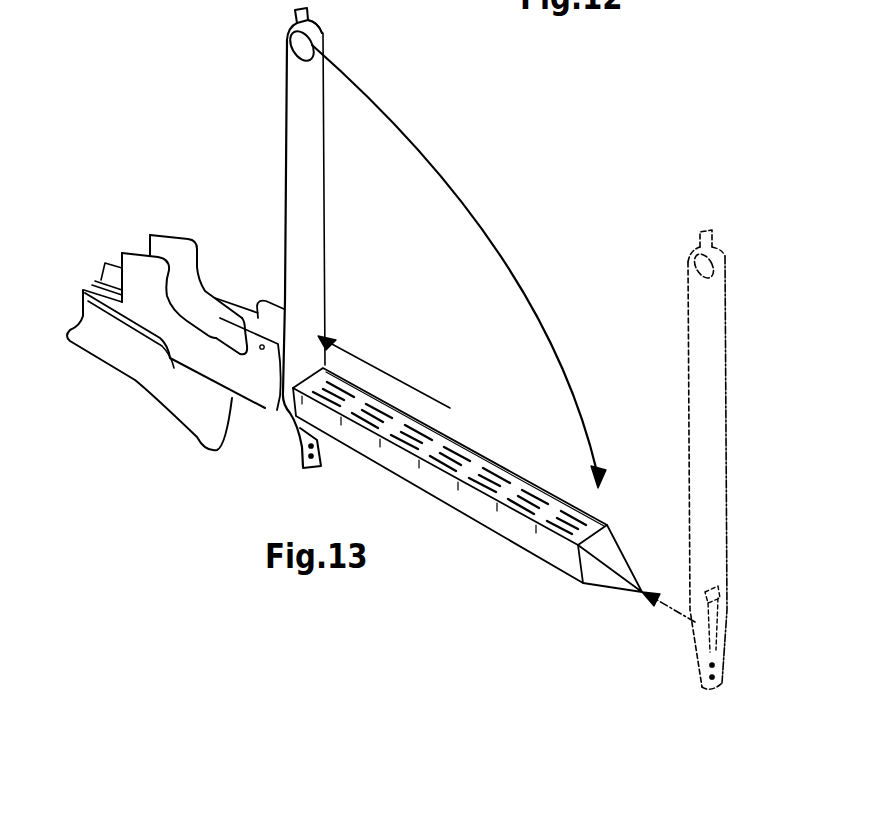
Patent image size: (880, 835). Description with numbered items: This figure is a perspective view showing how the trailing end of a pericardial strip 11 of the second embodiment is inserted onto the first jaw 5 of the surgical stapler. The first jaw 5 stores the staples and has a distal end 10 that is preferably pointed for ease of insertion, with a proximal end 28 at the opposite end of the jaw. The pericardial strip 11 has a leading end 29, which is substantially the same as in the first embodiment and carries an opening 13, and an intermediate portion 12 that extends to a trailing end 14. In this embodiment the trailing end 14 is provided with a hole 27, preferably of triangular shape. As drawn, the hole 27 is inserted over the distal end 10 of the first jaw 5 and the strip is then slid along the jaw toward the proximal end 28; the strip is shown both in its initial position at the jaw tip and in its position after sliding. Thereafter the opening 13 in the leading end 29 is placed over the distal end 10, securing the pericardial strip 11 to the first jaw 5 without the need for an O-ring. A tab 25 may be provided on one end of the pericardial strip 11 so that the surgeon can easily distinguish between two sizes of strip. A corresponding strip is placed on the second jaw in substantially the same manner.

The first jaw 5 is at (515, 530).
The distal end 10 is at (613, 577).
The pericardial strip 11 is at (254, 97).
The intermediate portion 12 is at (706, 412).
The opening 13 is at (291, 44).
The trailing end 14 is at (322, 452).
The tab 25 is at (297, 23).
The hole 27 is at (727, 617).
The proximal end 28 is at (265, 407).
The leading end 29 is at (312, 27).